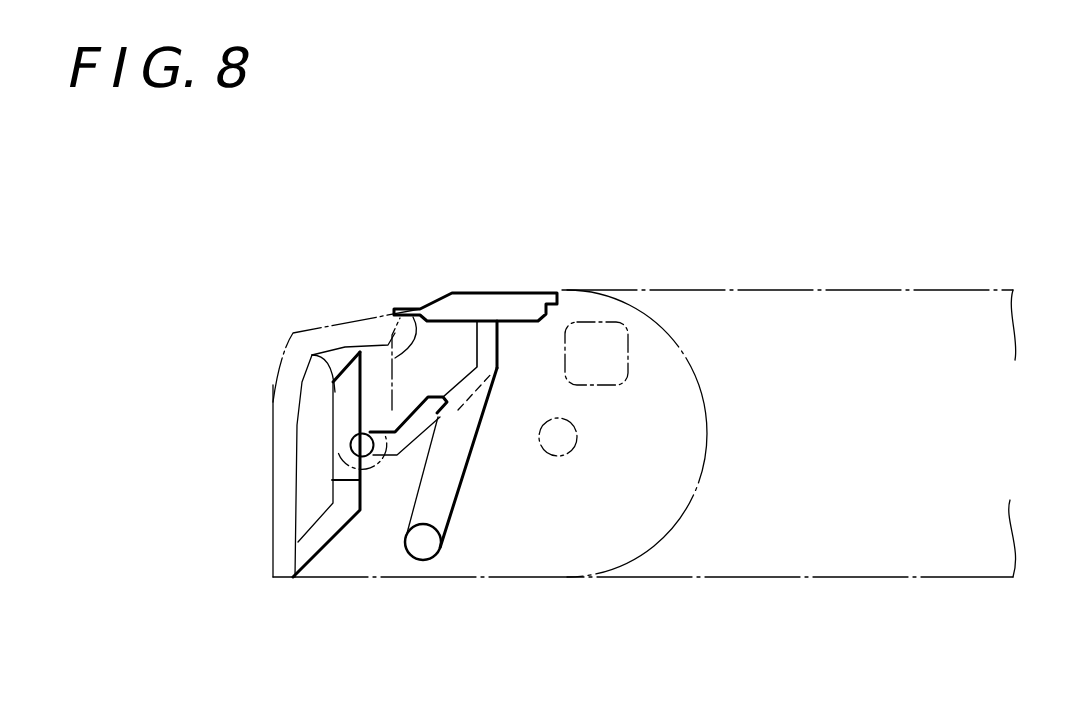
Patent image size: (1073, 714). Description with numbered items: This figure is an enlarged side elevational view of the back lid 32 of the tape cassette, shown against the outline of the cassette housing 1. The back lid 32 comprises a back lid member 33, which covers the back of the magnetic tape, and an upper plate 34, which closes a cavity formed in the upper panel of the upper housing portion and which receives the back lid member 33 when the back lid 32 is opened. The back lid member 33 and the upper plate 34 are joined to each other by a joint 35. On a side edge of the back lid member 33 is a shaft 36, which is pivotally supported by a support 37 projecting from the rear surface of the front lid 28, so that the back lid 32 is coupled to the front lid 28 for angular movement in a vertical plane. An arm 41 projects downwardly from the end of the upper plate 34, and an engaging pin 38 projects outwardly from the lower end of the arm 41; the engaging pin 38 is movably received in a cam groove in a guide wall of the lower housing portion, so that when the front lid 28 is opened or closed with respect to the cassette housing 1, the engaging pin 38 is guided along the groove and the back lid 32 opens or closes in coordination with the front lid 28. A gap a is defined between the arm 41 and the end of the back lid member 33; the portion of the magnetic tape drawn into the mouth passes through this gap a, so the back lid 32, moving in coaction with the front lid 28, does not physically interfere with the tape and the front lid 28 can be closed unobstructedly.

The cassette housing 1 is at (712, 290).
The front lid 28 is at (271, 412).
The back lid 32 is at (468, 290).
The back lid member 33 is at (345, 400).
The upper plate 34 is at (515, 300).
The joint 35 is at (418, 427).
The shaft 36 is at (362, 446).
The support 37 is at (413, 317).
The engaging pin 38 is at (423, 552).
The arm 41 is at (443, 503).
The gap a is at (370, 532).